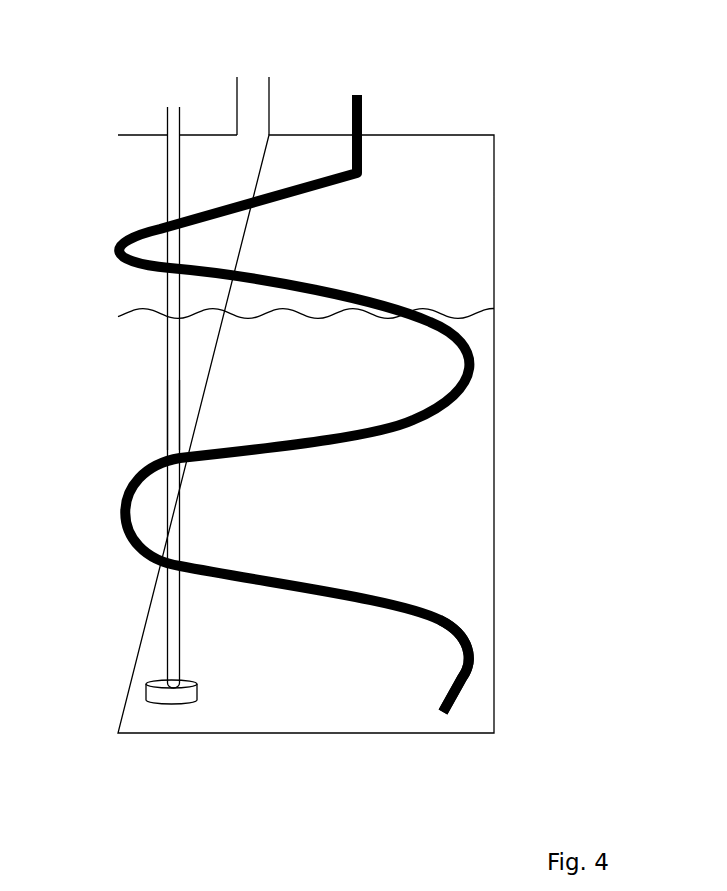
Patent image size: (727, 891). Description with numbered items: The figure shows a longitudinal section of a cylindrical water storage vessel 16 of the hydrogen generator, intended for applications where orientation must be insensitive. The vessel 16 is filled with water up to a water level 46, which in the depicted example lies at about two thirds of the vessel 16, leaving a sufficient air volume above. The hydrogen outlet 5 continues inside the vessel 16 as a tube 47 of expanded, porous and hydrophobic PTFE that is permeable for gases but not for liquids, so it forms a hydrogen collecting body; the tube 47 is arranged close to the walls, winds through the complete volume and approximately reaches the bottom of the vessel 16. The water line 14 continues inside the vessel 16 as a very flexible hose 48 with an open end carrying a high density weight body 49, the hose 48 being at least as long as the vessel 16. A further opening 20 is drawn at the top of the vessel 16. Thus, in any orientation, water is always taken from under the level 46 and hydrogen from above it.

The hydrogen outlet 5 is at (362, 117).
The water line 14 is at (167, 121).
The water storage vessel 16 is at (494, 432).
The filler neck 20 is at (269, 85).
The water level 46 is at (455, 310).
The tube 47 is at (466, 633).
The hose 48 is at (165, 412).
The weight body 49 is at (165, 694).